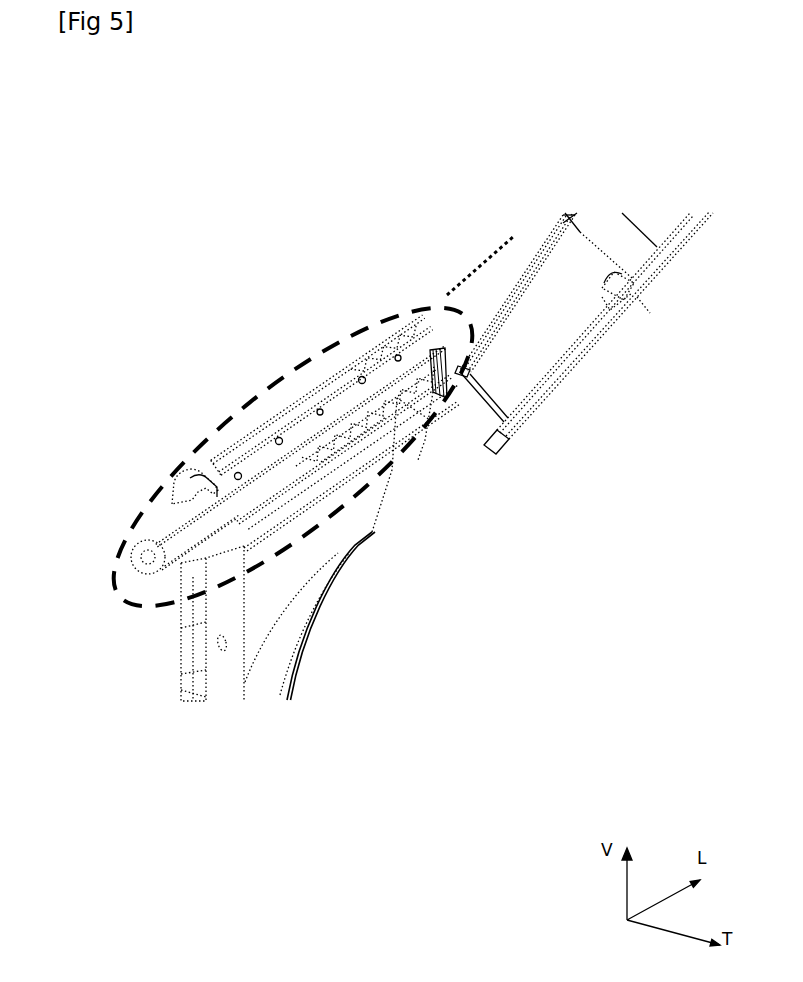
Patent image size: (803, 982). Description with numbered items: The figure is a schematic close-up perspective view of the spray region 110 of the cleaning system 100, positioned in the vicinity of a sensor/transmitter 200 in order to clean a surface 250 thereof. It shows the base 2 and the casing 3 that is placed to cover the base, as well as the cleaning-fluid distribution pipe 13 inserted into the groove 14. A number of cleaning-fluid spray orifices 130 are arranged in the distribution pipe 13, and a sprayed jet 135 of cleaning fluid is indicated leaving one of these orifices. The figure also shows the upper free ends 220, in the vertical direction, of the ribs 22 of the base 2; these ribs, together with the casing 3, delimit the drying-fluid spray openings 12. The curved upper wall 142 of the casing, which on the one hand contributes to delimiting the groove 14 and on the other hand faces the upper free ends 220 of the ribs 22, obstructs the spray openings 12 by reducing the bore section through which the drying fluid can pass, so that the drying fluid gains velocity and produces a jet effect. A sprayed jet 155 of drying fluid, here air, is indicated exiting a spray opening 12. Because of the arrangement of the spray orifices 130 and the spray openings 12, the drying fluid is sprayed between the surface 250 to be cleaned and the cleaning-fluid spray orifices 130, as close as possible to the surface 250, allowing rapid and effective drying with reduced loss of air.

The base 2 is at (281, 584).
The casing 3 is at (187, 658).
The spray opening 12 is at (346, 434).
The cleaning-fluid distribution pipe 13 is at (170, 518).
The groove 14 is at (179, 523).
The rib 22 is at (298, 475).
The cleaning system 100 is at (363, 633).
The spray region 110 is at (117, 592).
The cleaning-fluid spray orifice 130 is at (278, 438).
The sprayed jet of cleaning fluid 135 is at (450, 293).
The curved upper wall 142 is at (238, 507).
The sprayed jet of drying fluid 155 is at (443, 350).
The sensor/transmitter 200 is at (563, 323).
The upper free end 220 is at (355, 420).
The surface 250 is at (538, 238).